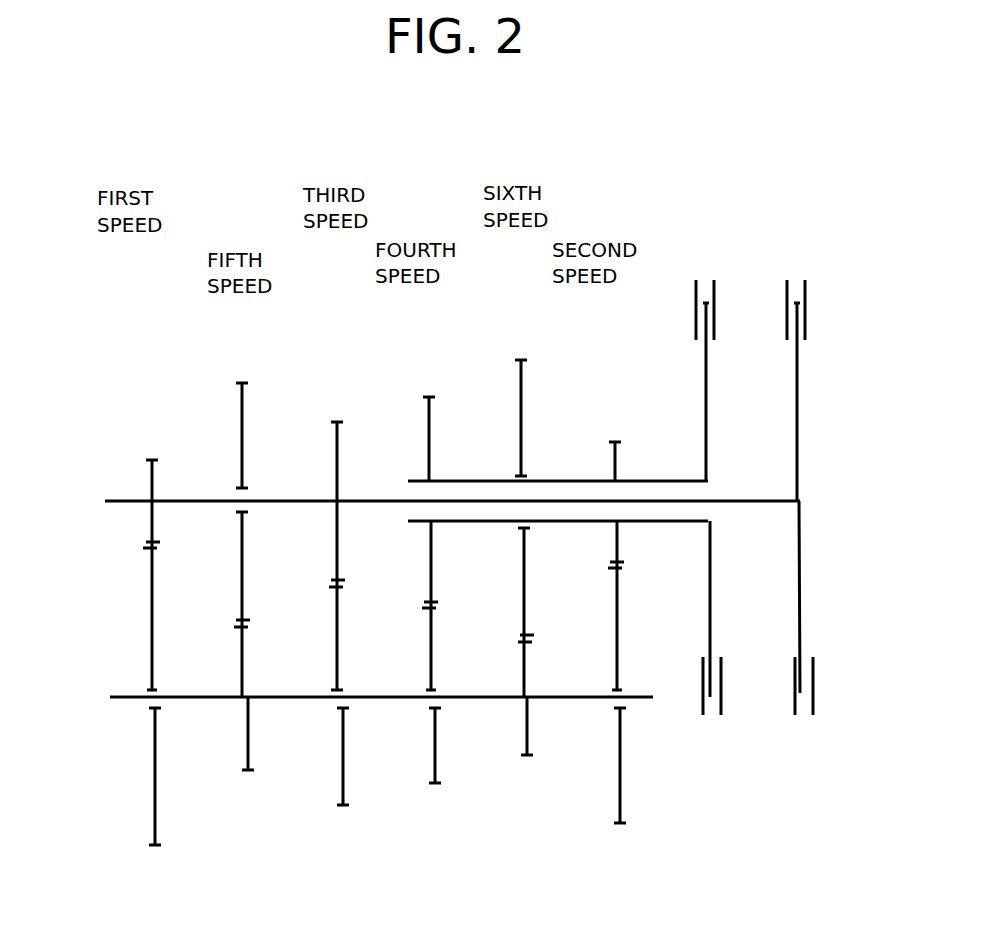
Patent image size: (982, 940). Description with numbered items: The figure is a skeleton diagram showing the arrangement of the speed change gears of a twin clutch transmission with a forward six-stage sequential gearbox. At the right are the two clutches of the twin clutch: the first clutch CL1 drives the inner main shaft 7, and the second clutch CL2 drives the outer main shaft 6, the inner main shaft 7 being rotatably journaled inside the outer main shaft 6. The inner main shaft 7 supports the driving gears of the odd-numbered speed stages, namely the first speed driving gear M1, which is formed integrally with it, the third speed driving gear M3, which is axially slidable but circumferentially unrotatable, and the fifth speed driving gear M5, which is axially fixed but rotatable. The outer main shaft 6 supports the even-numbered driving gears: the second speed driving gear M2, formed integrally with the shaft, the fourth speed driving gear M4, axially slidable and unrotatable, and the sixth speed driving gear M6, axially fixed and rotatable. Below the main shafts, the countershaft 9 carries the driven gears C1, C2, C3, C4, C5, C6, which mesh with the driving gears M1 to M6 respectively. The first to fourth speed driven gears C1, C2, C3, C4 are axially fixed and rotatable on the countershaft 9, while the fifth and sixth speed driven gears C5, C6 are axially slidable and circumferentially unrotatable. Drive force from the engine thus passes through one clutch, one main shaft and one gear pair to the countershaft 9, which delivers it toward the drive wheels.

The outer main shaft 6 is at (668, 478).
The inner main shaft 7 is at (745, 498).
The countershaft 9 is at (130, 698).
The first clutch CL1 is at (800, 243).
The second clutch CL2 is at (711, 243).
The first speed driving gear M1 is at (150, 488).
The second speed driving gear M2 is at (612, 478).
The third speed driving gear M3 is at (336, 485).
The fourth speed driving gear M4 is at (428, 455).
The fifth speed driving gear M5 is at (240, 456).
The sixth speed driving gear M6 is at (520, 428).
The first speed driven gear C1 is at (160, 785).
The second speed driven gear C2 is at (624, 790).
The third speed driven gear C3 is at (345, 775).
The fourth speed driven gear C4 is at (438, 745).
The fifth speed driven gear C5 is at (252, 735).
The sixth speed driven gear C6 is at (530, 722).